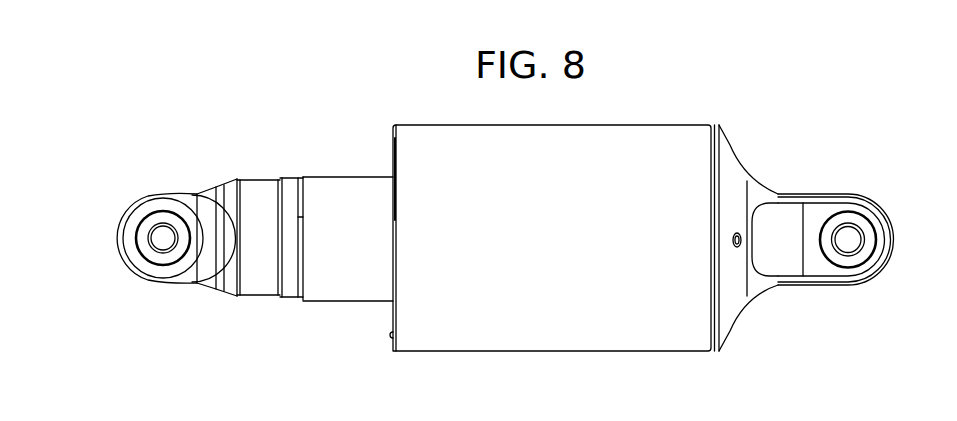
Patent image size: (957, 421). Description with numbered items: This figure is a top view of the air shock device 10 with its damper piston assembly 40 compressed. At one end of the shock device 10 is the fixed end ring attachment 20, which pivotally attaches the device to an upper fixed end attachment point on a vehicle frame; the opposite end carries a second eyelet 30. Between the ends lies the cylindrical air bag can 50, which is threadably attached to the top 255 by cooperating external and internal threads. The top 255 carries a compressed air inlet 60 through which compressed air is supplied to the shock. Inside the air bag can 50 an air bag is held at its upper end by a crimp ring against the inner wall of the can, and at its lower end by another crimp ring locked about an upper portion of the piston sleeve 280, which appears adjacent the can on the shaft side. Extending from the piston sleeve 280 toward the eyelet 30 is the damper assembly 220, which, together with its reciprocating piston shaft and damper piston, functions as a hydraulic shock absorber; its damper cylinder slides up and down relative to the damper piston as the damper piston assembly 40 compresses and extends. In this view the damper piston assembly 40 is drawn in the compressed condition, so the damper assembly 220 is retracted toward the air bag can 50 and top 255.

The shock device 10 is at (781, 108).
The fixed end ring attachment 20 is at (863, 221).
The mounting eyelet 30 is at (121, 271).
The damper piston assembly 40 is at (294, 125).
The air bag can 50 is at (554, 213).
The compressed air inlet 60 is at (789, 300).
The damper assembly 220 is at (222, 171).
The top 255 is at (833, 264).
The piston sleeve 280 is at (316, 280).